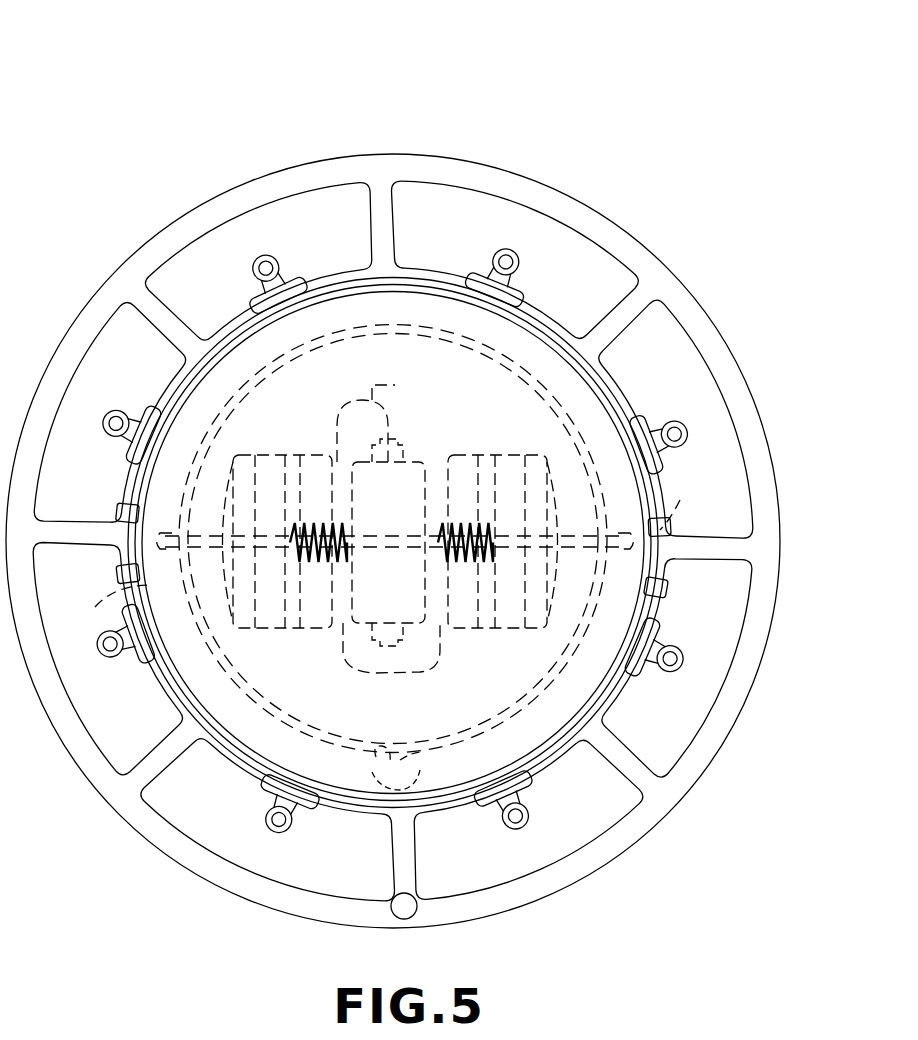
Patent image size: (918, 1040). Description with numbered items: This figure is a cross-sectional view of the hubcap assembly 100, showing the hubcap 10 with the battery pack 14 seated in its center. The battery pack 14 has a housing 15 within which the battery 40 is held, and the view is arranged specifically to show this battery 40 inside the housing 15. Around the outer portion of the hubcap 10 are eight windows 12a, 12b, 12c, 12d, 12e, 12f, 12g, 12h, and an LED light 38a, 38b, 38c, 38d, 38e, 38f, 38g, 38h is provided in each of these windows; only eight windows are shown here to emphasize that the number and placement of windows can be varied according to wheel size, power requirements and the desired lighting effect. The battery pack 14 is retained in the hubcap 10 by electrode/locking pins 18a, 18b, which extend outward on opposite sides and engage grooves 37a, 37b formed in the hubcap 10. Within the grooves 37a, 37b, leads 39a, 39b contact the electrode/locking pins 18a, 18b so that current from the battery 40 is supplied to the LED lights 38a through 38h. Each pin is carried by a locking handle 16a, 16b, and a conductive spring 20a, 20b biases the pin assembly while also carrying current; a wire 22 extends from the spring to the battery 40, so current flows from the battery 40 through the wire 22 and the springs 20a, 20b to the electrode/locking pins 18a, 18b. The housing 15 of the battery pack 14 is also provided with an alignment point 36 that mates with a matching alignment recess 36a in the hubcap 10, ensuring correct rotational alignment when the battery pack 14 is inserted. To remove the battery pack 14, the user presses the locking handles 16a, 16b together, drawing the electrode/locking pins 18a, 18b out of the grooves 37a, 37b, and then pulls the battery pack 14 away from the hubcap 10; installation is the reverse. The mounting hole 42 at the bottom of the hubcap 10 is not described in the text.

The hubcap assembly 100 is at (452, 70).
The hubcap 10 is at (470, 168).
The window 12a is at (192, 858).
The window 12b is at (568, 862).
The window 12c is at (725, 680).
The window 12d is at (735, 405).
The window 12e is at (643, 268).
The window 12f is at (335, 225).
The window 12g is at (107, 320).
The window 12h is at (63, 690).
The battery pack 14 is at (232, 340).
The housing 15 is at (605, 705).
The locking handle 16a is at (272, 640).
The locking handle 16b is at (497, 640).
The electrode/locking pin 18a is at (110, 588).
The electrode/locking pin 18b is at (672, 510).
The spring 20a is at (325, 520).
The spring 20b is at (470, 520).
The wire 22 is at (378, 400).
The alignment point 36 is at (393, 745).
The alignment recess 36a is at (425, 782).
The groove 37a is at (110, 507).
The groove 37b is at (668, 540).
The lead 39a is at (135, 582).
The lead 39b is at (650, 596).
The LED light 38a is at (275, 835).
The LED light 38b is at (530, 815).
The LED light 38c is at (688, 660).
The LED light 38d is at (690, 430).
The LED light 38e is at (525, 262).
The LED light 38f is at (263, 255).
The LED light 38g is at (100, 408).
The LED light 38h is at (102, 670).
The battery 40 is at (343, 645).
The mounting hole 42 is at (408, 915).